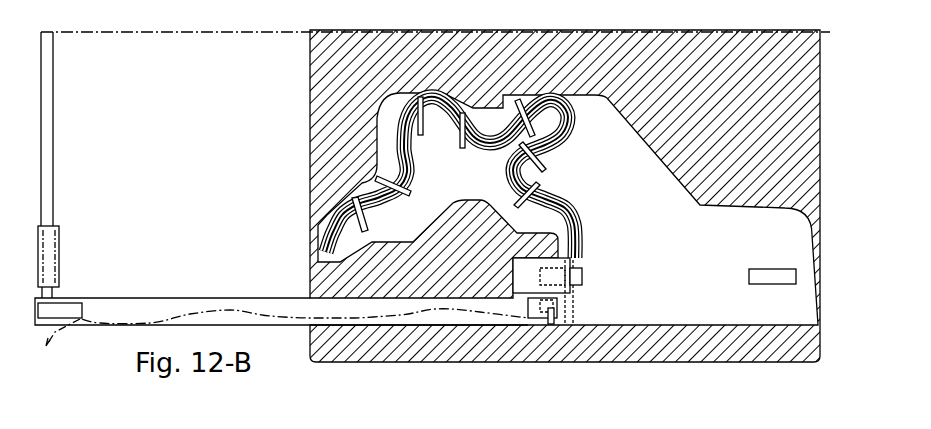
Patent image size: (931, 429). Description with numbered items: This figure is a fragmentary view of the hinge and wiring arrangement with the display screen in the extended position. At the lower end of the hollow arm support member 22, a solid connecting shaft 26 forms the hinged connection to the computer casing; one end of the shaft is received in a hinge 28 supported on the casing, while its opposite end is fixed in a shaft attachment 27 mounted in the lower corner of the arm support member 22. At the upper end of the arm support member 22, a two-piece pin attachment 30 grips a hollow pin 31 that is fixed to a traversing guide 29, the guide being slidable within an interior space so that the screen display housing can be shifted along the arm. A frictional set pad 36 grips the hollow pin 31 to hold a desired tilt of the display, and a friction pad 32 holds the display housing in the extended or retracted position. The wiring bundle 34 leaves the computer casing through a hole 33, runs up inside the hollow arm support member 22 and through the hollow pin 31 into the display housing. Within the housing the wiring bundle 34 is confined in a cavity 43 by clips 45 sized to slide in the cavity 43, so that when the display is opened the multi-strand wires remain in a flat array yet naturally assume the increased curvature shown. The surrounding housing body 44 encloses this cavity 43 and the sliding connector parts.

The arm support member 22 is at (293, 300).
The solid connecting shaft 26 is at (48, 120).
The shaft attachment 27 is at (42, 310).
The hinge 28 is at (60, 228).
The traversing guide 29 is at (513, 300).
The pin attachment 30 is at (528, 302).
The hollow pin 31 is at (568, 323).
The friction pad 32 is at (582, 284).
The hole 33 is at (50, 343).
The wiring bundle 34 is at (340, 215).
The frictional set pad 36 is at (550, 325).
The cavity 43 is at (771, 251).
The housing 44 is at (820, 103).
The clip 45 is at (365, 219).